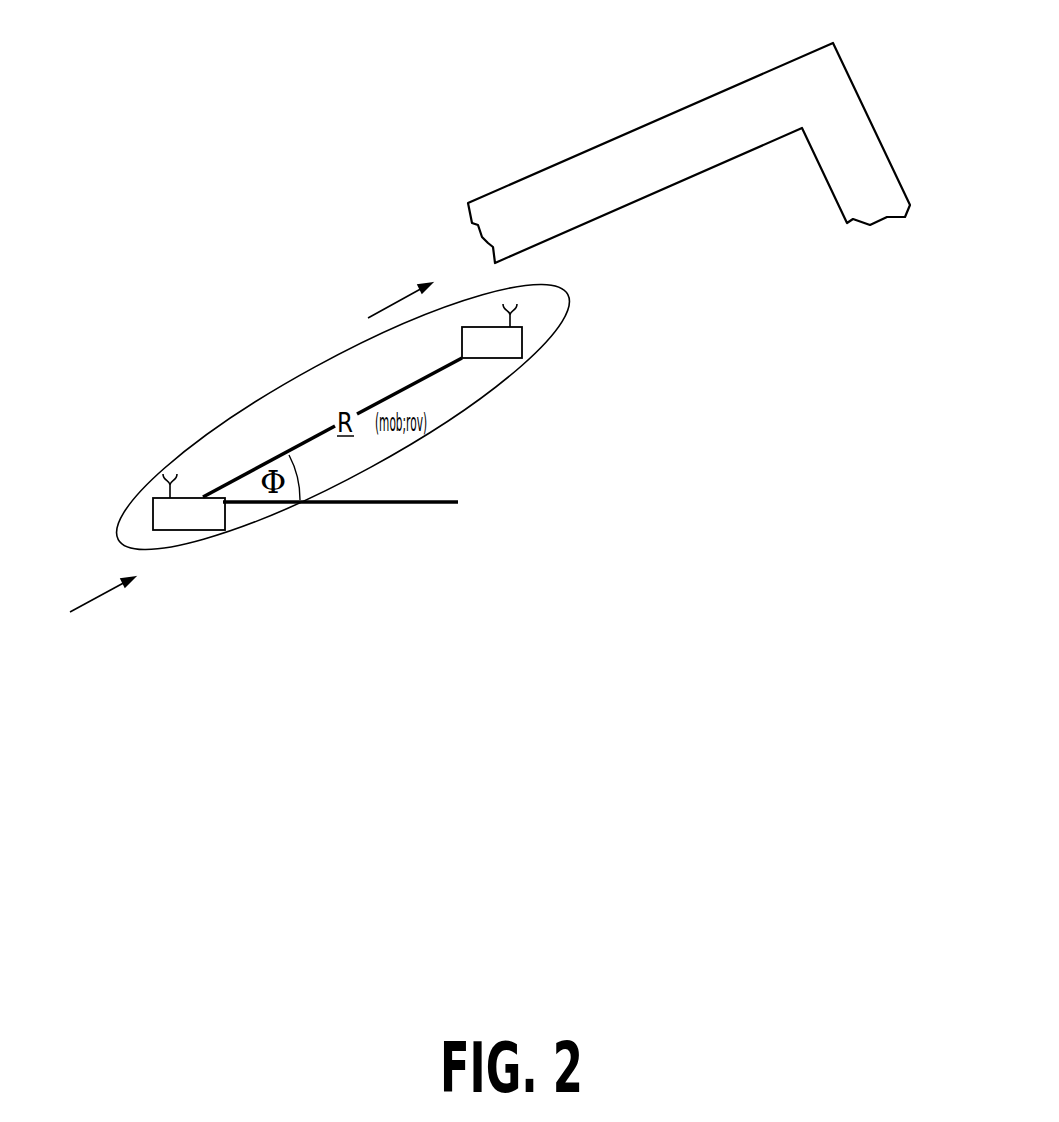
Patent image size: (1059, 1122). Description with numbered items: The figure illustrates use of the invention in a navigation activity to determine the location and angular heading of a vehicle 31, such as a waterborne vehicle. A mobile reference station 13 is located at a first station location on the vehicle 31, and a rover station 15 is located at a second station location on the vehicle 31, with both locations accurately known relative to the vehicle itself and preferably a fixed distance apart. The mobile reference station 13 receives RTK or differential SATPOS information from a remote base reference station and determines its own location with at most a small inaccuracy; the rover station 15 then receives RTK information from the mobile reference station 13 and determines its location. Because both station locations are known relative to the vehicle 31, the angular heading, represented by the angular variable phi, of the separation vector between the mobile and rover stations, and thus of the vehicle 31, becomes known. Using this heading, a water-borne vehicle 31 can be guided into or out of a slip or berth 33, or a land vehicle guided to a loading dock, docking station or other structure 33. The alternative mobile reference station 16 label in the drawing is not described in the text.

The slip or berth 33 is at (854, 151).
The vehicle 31 is at (240, 430).
The rover station 15 is at (522, 353).
The mobile reference station 13 is at (155, 508).
The mobile unit 16 is at (149, 486).